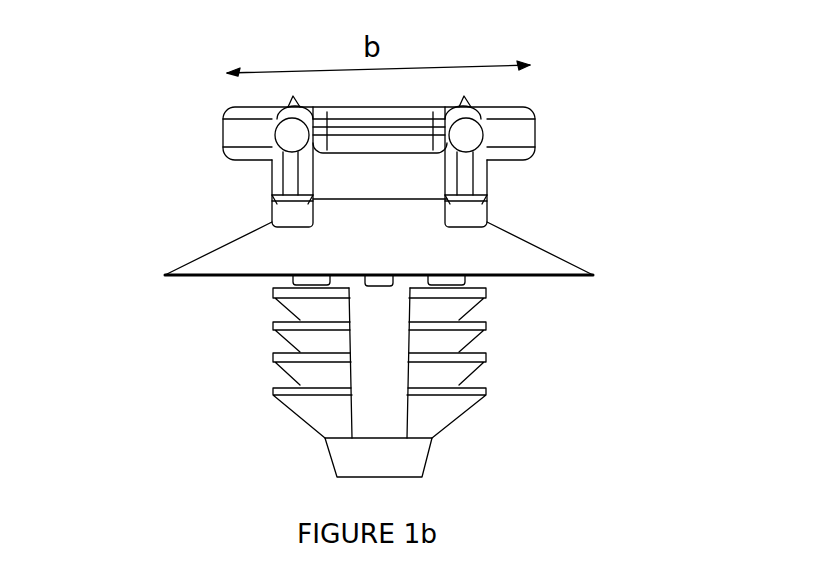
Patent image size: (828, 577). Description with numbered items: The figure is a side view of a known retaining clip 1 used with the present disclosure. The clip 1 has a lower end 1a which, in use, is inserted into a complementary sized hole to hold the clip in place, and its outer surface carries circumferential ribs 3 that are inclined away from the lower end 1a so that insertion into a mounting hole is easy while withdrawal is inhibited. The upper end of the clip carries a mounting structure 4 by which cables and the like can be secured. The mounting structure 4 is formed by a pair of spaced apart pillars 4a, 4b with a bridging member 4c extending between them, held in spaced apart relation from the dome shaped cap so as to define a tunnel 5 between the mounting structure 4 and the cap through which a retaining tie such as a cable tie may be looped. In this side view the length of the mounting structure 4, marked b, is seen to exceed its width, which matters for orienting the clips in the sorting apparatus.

The clip 1 is at (138, 273).
The lower end 1a is at (300, 453).
The circumferential ribs 3 is at (285, 360).
The mounting structure 4 is at (565, 133).
The pillar 4a is at (285, 182).
The pillar 4b is at (473, 178).
The bridging member 4c is at (393, 128).
The tunnel 5 is at (368, 178).